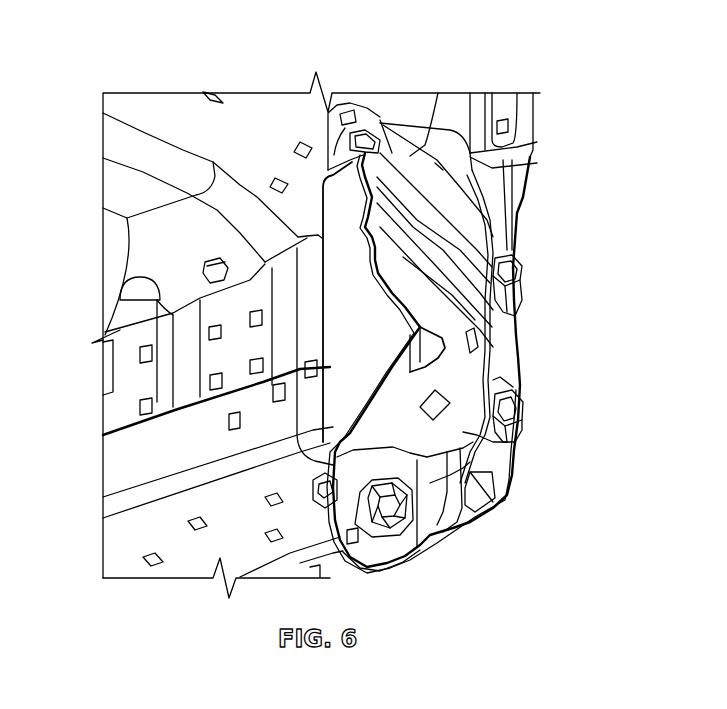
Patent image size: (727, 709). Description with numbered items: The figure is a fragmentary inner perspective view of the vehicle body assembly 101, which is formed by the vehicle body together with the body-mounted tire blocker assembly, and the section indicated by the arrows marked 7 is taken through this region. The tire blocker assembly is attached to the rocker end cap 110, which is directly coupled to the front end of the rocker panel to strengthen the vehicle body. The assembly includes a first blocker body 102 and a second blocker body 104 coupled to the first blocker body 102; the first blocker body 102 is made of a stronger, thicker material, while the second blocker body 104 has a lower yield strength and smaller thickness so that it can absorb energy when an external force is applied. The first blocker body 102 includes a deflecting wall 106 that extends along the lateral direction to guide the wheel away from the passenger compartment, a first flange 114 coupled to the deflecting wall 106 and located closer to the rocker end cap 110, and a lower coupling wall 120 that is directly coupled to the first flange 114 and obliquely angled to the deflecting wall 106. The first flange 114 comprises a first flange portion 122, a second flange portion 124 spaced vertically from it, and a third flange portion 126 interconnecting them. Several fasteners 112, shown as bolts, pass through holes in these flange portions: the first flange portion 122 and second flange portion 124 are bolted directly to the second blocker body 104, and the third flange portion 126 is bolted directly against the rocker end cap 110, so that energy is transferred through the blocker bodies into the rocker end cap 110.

The vehicle body assembly 101 is at (497, 521).
The first blocker body 102 is at (473, 350).
The second blocker body 104 is at (343, 192).
The deflecting wall 106 is at (437, 217).
The rocker end cap 110 is at (307, 412).
The fastener 112 is at (362, 130).
The first flange 114 is at (400, 540).
The lower coupling wall 120 is at (510, 467).
The first flange portion 122 is at (352, 125).
The second flange portion 124 is at (372, 552).
The third flange portion 126 is at (510, 382).
The section line 7 is at (518, 230).